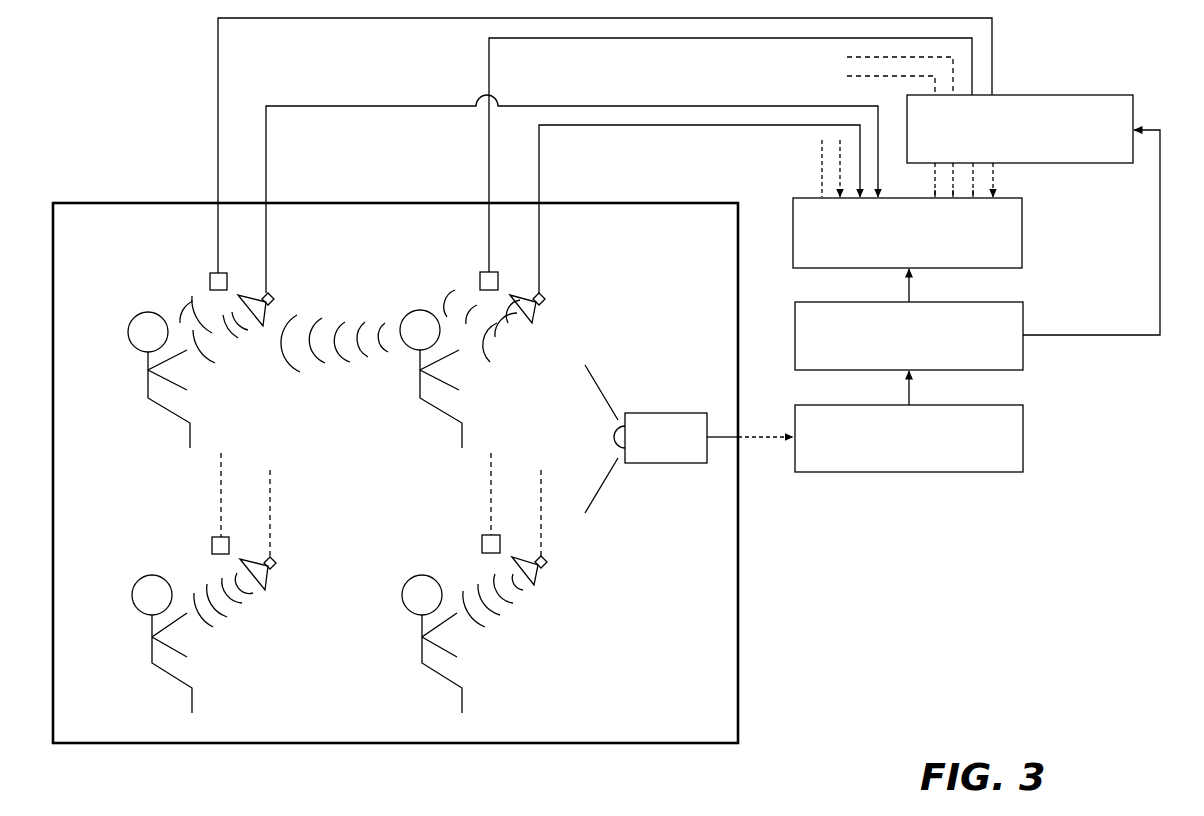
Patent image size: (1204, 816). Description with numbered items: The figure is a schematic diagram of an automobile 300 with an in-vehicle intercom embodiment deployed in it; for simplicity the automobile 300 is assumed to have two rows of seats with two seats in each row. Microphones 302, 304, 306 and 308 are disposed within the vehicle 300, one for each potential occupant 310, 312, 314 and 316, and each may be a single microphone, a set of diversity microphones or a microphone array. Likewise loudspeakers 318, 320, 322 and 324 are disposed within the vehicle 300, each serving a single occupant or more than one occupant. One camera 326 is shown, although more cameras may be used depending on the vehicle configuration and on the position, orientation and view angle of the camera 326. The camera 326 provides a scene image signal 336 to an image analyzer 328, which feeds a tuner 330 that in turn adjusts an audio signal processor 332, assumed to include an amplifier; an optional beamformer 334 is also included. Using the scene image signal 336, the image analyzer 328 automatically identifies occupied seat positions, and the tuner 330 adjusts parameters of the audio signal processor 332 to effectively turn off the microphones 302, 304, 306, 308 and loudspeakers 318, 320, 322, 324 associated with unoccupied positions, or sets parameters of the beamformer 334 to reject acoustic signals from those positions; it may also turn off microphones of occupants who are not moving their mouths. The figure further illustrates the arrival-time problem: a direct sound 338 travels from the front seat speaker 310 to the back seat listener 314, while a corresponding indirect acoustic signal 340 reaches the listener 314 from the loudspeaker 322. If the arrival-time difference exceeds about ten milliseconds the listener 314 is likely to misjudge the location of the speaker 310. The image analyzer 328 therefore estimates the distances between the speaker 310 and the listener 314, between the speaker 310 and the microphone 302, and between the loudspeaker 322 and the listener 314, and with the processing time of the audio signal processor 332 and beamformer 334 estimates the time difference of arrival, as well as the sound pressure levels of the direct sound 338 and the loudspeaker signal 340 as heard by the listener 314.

The automobile 300 is at (372, 744).
The microphone 302 is at (478, 280).
The microphone 304 is at (480, 543).
The microphone 306 is at (207, 280).
The microphone 308 is at (209, 543).
The occupant 310 is at (420, 372).
The occupant 312 is at (422, 637).
The occupant 314 is at (148, 372).
The occupant 316 is at (152, 637).
The loudspeaker 318 is at (543, 312).
The loudspeaker 320 is at (545, 574).
The loudspeaker 322 is at (271, 313).
The loudspeaker 324 is at (273, 577).
The camera 326 is at (662, 464).
The image analyzer 328 is at (974, 452).
The tuner 330 is at (891, 362).
The audio signal processor 332 is at (972, 244).
The beamformer 334 is at (1088, 141).
The scene image signal 336 is at (720, 433).
The direct sound 338 is at (320, 365).
The acoustic signal 340 is at (225, 350).